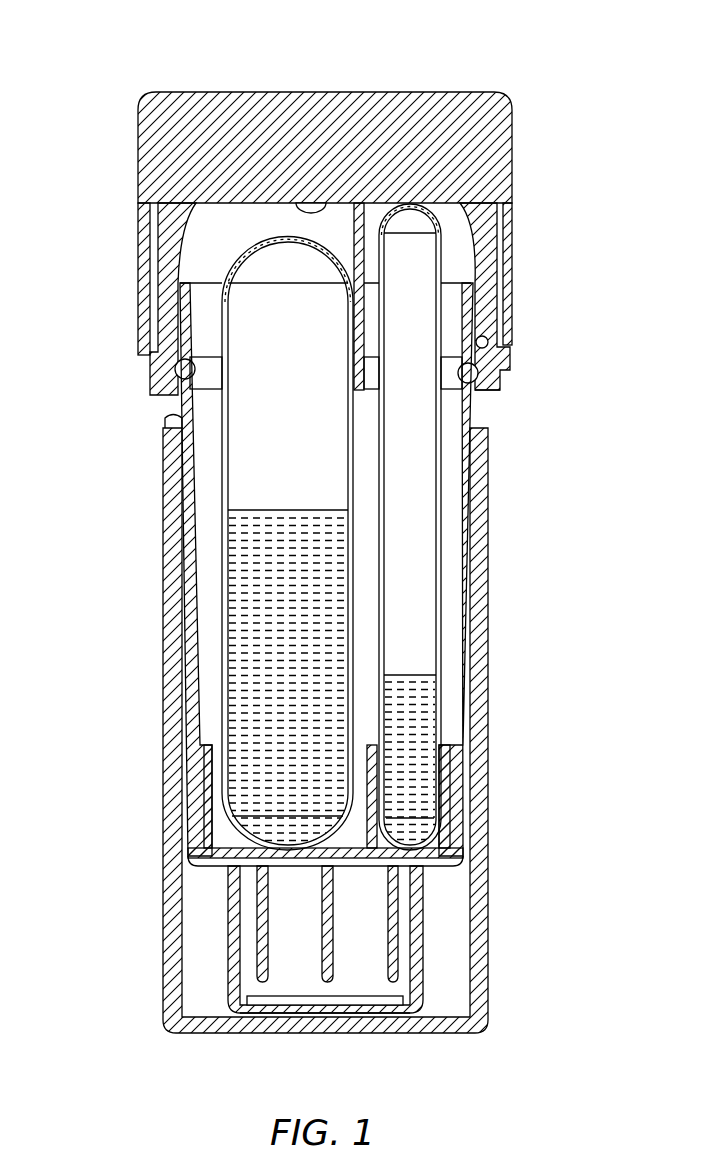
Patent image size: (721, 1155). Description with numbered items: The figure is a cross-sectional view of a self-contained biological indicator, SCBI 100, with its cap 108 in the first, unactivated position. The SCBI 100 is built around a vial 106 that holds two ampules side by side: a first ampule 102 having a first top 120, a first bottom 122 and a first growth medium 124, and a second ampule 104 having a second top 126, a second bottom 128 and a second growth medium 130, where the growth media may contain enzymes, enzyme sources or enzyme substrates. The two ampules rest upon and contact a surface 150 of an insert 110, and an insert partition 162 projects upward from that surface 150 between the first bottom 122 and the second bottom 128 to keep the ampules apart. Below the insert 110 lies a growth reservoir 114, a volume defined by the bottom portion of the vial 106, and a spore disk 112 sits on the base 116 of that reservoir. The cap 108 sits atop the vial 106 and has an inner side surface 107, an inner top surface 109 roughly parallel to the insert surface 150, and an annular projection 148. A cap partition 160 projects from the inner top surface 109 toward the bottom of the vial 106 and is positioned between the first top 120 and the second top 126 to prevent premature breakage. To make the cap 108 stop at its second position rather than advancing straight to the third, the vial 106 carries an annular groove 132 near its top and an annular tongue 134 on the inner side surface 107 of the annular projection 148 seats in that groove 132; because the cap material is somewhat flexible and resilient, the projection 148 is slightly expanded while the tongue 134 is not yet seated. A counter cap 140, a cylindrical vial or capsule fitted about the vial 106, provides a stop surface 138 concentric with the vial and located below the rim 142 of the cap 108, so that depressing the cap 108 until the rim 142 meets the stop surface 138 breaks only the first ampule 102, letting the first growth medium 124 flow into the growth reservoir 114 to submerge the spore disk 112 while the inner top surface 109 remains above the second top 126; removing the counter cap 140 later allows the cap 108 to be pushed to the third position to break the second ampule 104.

The SCBI 100 is at (118, 48).
The first ampule 102 is at (405, 548).
The second ampule 104 is at (285, 440).
The vial 106 is at (468, 560).
The inner side surface 107 is at (188, 262).
The cap 108 is at (478, 138).
The inner top surface 109 is at (333, 202).
The insert 110 is at (322, 855).
The spore disk 112 is at (370, 1003).
The growth reservoir 114 is at (296, 948).
The base 116 is at (335, 1012).
The first top 120 is at (412, 215).
The first bottom 122 is at (403, 830).
The first growth medium 124 is at (405, 703).
The second top 126 is at (283, 260).
The second bottom 128 is at (295, 830).
The second growth medium 130 is at (290, 660).
The annular groove 132 is at (470, 374).
The annular tongue 134 is at (482, 342).
The stop surface 138 is at (165, 415).
The counter cap 140 is at (478, 608).
The rim 142 is at (497, 395).
The annular projection 148 is at (483, 265).
The surface 150 is at (375, 855).
The cap partition 160 is at (357, 267).
The insert partition 162 is at (375, 772).